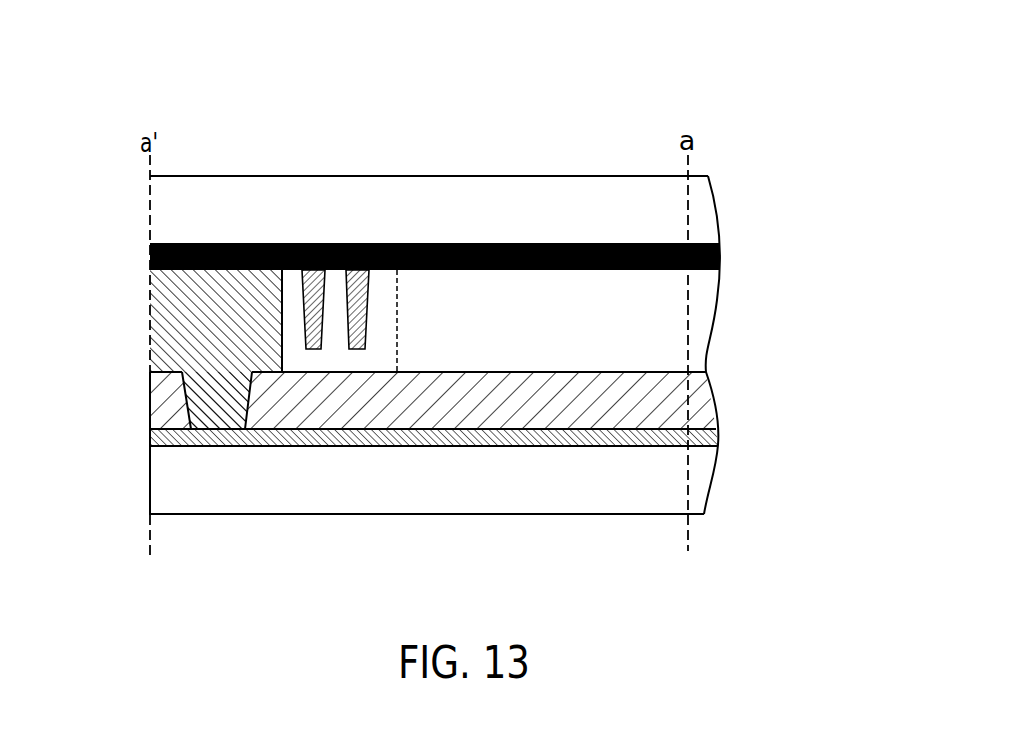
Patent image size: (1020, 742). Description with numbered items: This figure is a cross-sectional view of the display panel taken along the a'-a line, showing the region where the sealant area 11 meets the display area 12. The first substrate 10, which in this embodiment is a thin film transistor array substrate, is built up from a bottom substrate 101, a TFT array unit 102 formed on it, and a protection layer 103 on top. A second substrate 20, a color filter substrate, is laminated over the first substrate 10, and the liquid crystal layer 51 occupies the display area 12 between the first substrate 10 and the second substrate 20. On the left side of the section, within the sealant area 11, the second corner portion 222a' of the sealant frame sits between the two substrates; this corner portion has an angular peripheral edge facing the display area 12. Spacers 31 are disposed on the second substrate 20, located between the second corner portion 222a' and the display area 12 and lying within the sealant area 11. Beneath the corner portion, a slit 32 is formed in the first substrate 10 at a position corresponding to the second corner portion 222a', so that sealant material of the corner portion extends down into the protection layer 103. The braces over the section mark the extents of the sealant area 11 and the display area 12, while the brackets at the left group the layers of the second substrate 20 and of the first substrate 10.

The sealant area 11 is at (148, 108).
The display area 12 is at (663, 108).
The second substrate 20 is at (140, 176).
The spacer 31 is at (318, 243).
The second corner portion 222a' is at (176, 349).
The slit 32 is at (220, 417).
The liquid crystal layer 51 is at (577, 335).
The first substrate 10 is at (441, 445).
The bottom substrate 101 is at (707, 482).
The TFT array unit 102 is at (713, 439).
The protection layer 103 is at (709, 407).